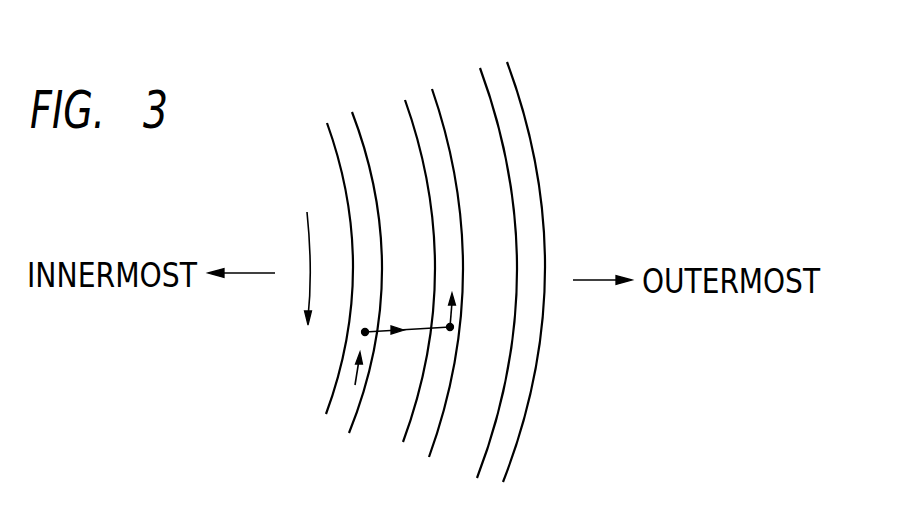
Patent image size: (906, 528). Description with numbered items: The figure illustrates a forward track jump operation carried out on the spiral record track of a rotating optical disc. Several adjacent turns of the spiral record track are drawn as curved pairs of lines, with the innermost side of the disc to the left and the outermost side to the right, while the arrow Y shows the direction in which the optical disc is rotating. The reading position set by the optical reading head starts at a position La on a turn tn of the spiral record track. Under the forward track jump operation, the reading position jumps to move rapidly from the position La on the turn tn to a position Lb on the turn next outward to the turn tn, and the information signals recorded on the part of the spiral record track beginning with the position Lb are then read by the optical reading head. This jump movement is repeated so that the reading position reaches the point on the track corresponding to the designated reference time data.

The turn of the spiral record track tn is at (340, 123).
The direction of disc rotation Y is at (319, 268).
The position on turn tn La is at (367, 330).
The position on turn tn+1 Lb is at (453, 323).